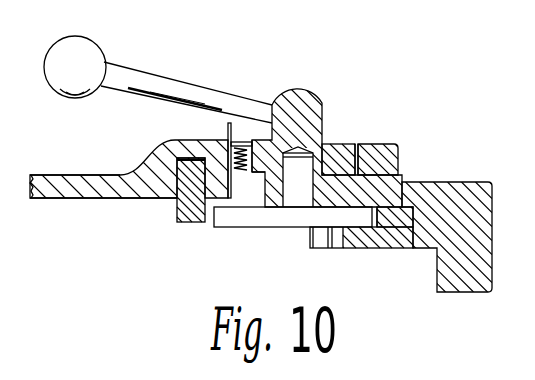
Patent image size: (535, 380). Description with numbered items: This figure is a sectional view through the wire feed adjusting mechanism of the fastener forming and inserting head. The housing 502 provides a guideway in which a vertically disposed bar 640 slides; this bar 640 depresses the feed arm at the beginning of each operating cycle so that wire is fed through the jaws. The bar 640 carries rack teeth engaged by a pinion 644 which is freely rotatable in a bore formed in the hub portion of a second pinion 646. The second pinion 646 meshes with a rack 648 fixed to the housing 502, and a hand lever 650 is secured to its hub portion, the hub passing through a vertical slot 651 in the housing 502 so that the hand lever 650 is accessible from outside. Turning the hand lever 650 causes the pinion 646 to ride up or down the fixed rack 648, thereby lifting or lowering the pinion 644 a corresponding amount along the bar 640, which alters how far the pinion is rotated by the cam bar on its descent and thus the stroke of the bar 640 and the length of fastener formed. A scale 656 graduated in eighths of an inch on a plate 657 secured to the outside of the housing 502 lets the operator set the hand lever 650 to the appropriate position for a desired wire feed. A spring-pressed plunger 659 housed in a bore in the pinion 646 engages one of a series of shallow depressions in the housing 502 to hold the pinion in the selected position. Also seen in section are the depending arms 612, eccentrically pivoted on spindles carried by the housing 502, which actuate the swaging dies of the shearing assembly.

The housing 502 is at (88, 177).
The depending arms 612 is at (186, 219).
The vertically disposed bar 640 is at (410, 212).
The pinion 644 is at (286, 220).
The second pinion 646 is at (337, 152).
The rack 648 is at (388, 160).
The hand lever 650 is at (176, 81).
The vertical slot 651 is at (276, 191).
The scale 656 is at (234, 129).
The plate 657 is at (373, 146).
The spring-pressed plunger 659 is at (229, 141).